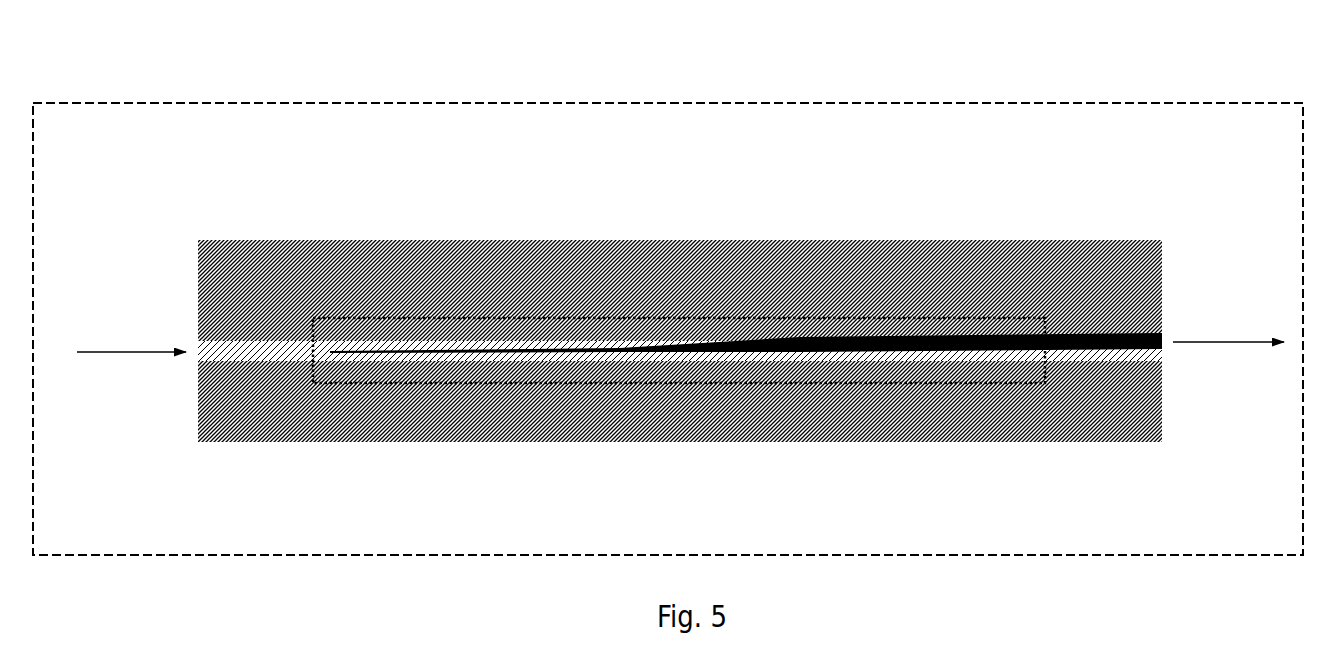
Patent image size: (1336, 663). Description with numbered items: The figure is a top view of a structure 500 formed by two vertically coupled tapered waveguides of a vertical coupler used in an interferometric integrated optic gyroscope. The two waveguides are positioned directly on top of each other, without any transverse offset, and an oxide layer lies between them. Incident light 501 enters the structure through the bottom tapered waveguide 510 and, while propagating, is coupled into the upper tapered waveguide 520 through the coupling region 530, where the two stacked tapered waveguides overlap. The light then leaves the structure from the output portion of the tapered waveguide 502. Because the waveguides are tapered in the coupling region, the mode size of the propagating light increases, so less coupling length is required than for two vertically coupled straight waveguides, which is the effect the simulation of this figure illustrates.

The structure 500 is at (966, 97).
The incident light 501 is at (131, 353).
The output portion of the tapered waveguide 502 is at (1228, 342).
The bottom tapered waveguide 510 is at (265, 340).
The upper tapered waveguide 520 is at (1137, 332).
The coupling region 530 is at (722, 318).